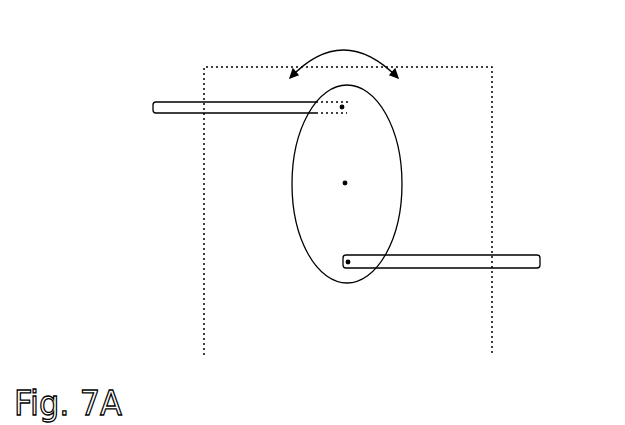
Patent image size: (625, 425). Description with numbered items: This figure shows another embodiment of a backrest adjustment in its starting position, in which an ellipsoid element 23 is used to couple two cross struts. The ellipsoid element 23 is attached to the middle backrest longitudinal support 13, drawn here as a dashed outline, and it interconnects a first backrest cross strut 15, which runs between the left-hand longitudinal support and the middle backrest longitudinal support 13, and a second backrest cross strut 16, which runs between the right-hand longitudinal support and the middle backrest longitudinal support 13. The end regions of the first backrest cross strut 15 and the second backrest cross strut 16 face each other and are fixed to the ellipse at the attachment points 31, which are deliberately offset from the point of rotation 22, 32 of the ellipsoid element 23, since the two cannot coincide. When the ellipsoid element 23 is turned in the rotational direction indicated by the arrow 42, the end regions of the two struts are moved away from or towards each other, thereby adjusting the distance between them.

The middle backrest longitudinal support 13 is at (478, 337).
The first backrest cross strut 15 is at (158, 102).
The second backrest cross strut 16 is at (533, 268).
The point of rotation 22 is at (405, 183).
The ellipsoid element 23 is at (304, 218).
The attachment points 31 is at (342, 107).
The rotation center 32 is at (345, 183).
The rotation direction 42 is at (350, 50).